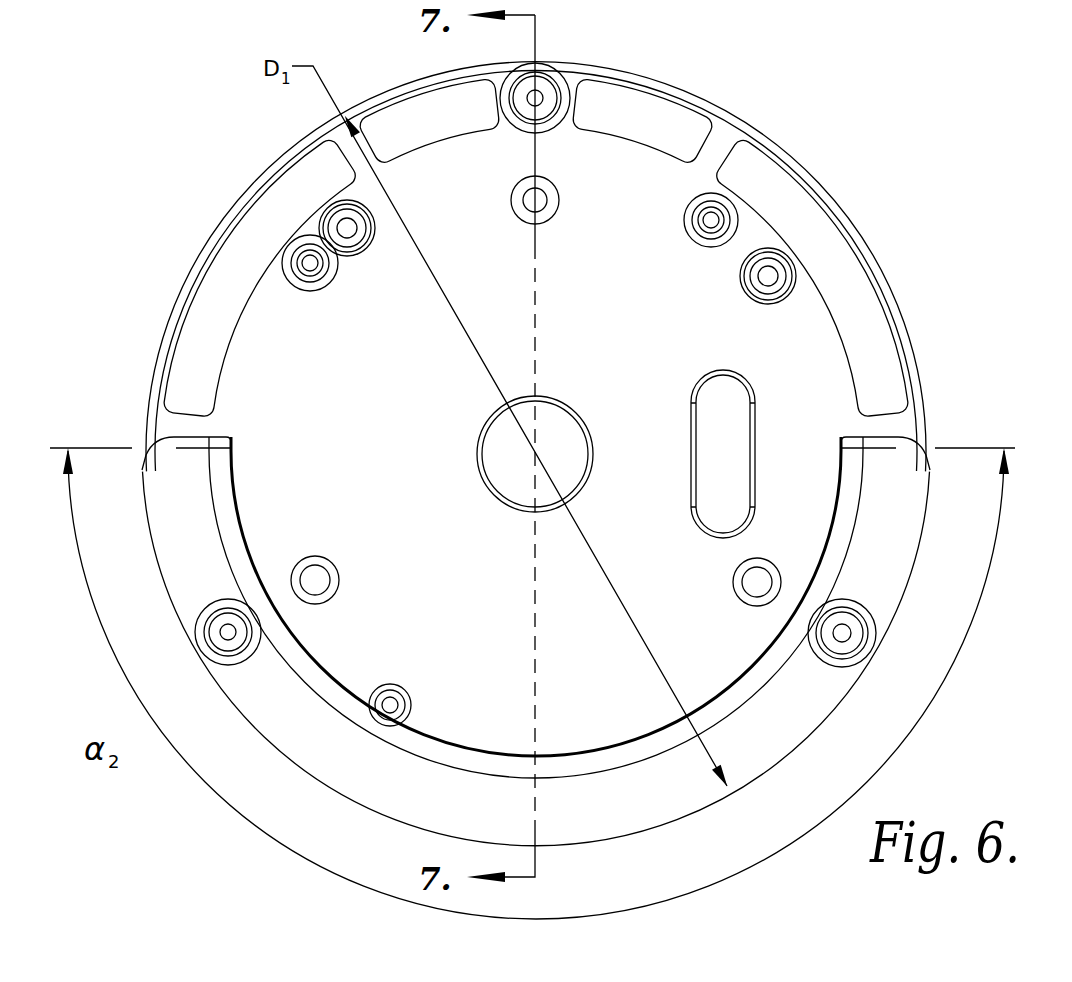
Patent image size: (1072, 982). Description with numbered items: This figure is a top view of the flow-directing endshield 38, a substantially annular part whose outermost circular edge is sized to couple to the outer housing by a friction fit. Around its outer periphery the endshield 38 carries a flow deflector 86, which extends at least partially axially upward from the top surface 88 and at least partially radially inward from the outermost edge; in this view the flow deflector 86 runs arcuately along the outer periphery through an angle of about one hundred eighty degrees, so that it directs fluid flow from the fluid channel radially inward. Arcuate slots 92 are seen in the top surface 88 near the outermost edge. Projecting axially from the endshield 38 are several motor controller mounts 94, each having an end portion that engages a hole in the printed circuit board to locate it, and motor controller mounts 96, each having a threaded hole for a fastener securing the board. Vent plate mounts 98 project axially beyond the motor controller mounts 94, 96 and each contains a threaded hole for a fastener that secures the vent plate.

The flow-directing endshield 38 is at (920, 100).
The flow deflector 86 is at (880, 437).
The top surface 88 is at (793, 320).
The arcuate slot 92 is at (433, 95).
The motor controller mount 94 is at (358, 250).
The motor controller mount 96 is at (304, 290).
The vent plate mount 98 is at (557, 78).